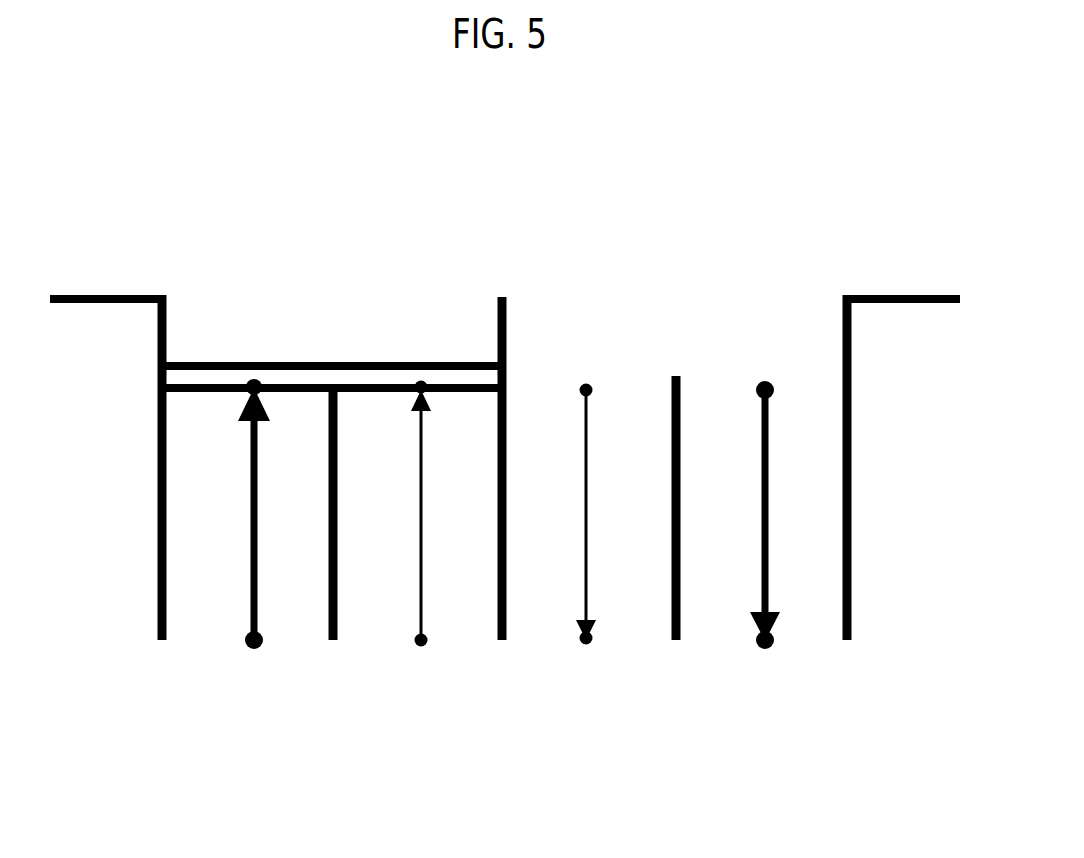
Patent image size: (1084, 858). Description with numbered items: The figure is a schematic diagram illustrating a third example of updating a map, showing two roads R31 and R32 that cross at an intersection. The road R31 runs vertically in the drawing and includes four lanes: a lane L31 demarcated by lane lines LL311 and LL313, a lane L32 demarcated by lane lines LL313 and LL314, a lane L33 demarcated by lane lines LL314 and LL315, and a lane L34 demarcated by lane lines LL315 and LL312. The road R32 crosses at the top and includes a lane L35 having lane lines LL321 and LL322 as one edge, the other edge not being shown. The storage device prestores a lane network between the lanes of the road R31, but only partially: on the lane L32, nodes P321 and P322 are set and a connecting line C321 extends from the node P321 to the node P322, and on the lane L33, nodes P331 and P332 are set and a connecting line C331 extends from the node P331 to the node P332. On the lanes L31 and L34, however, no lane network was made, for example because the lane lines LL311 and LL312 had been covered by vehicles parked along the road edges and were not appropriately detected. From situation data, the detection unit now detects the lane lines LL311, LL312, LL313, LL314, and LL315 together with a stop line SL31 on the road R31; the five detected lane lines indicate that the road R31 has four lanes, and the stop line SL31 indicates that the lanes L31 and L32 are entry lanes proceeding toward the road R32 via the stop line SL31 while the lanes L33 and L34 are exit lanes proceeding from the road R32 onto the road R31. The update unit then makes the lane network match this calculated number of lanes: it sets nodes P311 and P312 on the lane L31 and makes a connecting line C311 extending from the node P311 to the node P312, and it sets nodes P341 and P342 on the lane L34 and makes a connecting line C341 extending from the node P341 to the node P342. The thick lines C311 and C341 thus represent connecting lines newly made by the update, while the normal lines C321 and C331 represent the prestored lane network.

The lane line LL321 is at (122, 305).
The lane line LL311 is at (158, 572).
The lane line LL322 is at (940, 303).
The lane line LL312 is at (852, 572).
The lane line LL313 is at (325, 640).
The lane line LL314 is at (498, 643).
The lane line LL315 is at (672, 643).
The stop line SL31 is at (257, 362).
The connecting line C311 is at (258, 558).
The connecting line C321 is at (424, 562).
The connecting line C331 is at (588, 562).
The connecting line C341 is at (769, 562).
The node P311 is at (250, 636).
The node P312 is at (252, 384).
The node P321 is at (418, 636).
The node P322 is at (419, 384).
The node P331 is at (584, 388).
The node P332 is at (582, 636).
The node P341 is at (760, 388).
The node P342 is at (758, 636).
The lane L31 is at (212, 672).
The lane L32 is at (408, 677).
The lane L33 is at (555, 675).
The lane L34 is at (752, 680).
The lane L35 is at (728, 183).
The road R31 is at (843, 763).
The road R32 is at (120, 115).